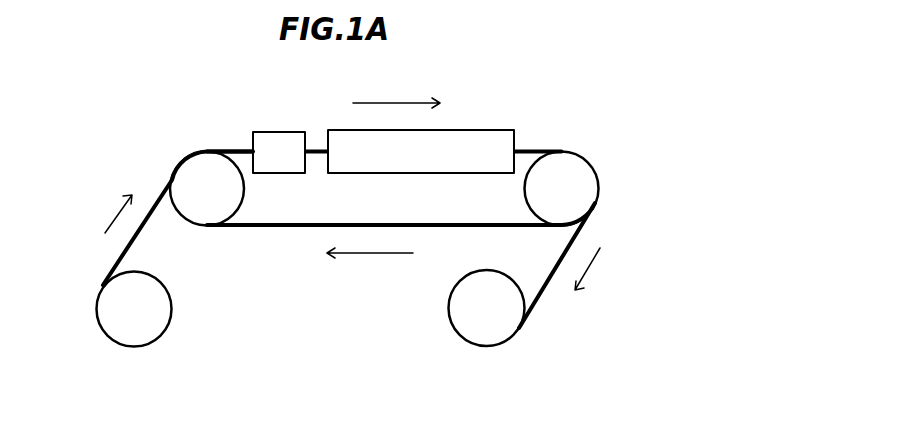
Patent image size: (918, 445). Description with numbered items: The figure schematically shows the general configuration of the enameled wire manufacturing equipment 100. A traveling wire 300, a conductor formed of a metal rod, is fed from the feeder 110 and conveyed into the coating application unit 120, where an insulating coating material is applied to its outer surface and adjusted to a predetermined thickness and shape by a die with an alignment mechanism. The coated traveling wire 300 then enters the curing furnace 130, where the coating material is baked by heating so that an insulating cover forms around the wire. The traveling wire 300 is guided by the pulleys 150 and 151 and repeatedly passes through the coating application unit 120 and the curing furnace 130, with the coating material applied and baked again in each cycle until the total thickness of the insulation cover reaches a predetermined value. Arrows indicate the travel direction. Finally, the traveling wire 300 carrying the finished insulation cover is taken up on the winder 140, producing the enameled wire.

The enameled wire manufacturing equipment 100 is at (292, 324).
The feeder 110 is at (108, 332).
The coating application unit 120 is at (278, 135).
The curing furnace 130 is at (483, 132).
The winder 140 is at (505, 335).
The pulley 150 is at (185, 163).
The pulley 151 is at (592, 170).
The traveling wire 300 is at (228, 148).